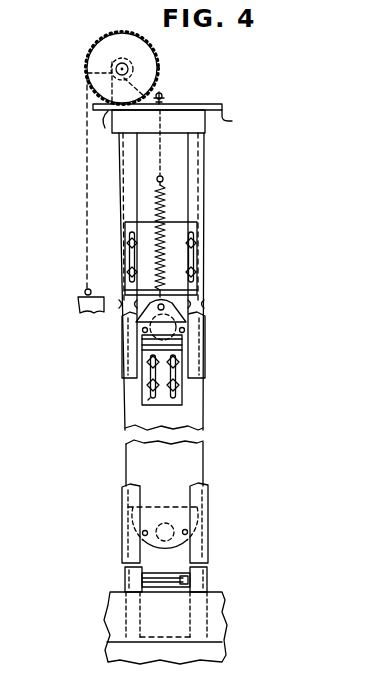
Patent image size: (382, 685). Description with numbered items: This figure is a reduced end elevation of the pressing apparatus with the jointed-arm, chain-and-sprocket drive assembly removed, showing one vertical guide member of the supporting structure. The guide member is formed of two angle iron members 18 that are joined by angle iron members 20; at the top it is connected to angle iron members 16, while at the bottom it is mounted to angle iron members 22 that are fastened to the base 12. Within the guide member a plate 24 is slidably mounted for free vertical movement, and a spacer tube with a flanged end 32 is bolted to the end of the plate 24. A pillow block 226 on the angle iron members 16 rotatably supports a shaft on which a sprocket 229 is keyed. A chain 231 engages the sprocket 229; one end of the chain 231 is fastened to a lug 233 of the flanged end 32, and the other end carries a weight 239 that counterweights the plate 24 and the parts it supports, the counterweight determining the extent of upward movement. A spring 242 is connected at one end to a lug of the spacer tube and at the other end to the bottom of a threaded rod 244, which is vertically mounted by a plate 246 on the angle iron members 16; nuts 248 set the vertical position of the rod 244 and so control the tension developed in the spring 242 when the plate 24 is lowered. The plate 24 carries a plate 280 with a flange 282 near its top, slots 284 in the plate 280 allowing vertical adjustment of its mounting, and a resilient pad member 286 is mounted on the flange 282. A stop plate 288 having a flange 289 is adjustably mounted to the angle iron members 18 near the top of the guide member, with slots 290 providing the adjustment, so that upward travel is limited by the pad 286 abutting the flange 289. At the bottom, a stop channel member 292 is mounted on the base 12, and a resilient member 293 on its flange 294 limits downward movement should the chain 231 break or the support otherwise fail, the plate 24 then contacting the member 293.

The base 12 is at (115, 648).
The angle iron members 16 is at (170, 270).
The angle iron members 18 is at (207, 322).
The angle iron members 20 is at (195, 132).
The angle iron members 22 is at (227, 604).
The plate 24 is at (202, 443).
The flanged ends 32 is at (200, 362).
The pillow blocks 226 is at (88, 73).
The sprocket 229 is at (98, 52).
The chain 231 is at (87, 234).
The lug 233 is at (152, 308).
The weights 239 is at (80, 306).
The spring 242 is at (166, 191).
The threaded rod 244 is at (163, 177).
The plate 246 is at (192, 104).
The nuts 248 is at (161, 97).
The plate 280 is at (148, 400).
The flange 282 is at (143, 352).
The slots 284 is at (152, 372).
The resilient pad member 286 is at (142, 341).
The stop plate 288 is at (178, 226).
The flange 289 is at (170, 291).
The slots 290 is at (196, 251).
The stop channel members 292 is at (148, 616).
The resilient member 293 is at (172, 573).
The flange 294 is at (183, 577).